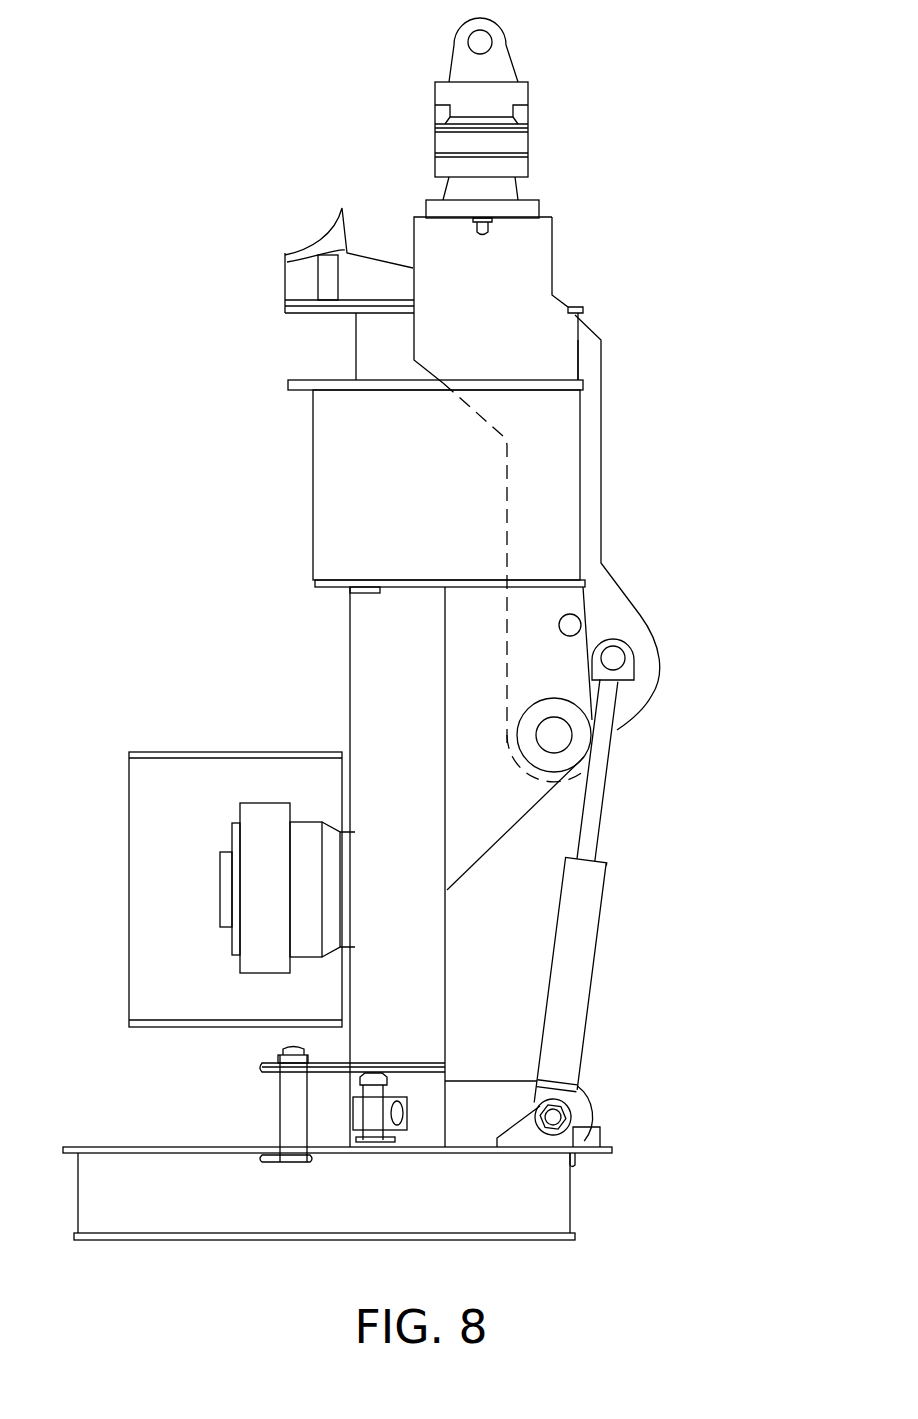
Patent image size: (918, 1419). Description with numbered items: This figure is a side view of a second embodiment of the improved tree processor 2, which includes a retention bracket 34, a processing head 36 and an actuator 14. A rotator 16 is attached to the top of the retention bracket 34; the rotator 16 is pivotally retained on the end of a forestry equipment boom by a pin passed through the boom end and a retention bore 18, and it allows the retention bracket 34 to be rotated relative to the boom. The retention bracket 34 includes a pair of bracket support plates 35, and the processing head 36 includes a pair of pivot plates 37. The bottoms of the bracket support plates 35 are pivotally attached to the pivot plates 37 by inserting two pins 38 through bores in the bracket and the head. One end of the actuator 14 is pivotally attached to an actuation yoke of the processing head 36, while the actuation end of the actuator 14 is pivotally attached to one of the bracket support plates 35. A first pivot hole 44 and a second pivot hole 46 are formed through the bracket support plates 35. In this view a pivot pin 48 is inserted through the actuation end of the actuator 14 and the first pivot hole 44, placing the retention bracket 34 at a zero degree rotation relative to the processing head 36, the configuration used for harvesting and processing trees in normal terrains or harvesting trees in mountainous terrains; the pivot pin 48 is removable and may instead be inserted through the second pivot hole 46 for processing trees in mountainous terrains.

The improved tree processor 2 is at (262, 656).
The actuator 14 is at (585, 953).
The rotator 16 is at (528, 143).
The retention bore 18 is at (488, 40).
The retention bracket 34 is at (598, 333).
The bracket support plates 35 is at (590, 448).
The processing head 36 is at (313, 543).
The pivot plates 37 is at (510, 806).
The pins 38 is at (558, 740).
The first pivot hole 44 is at (617, 642).
The second pivot hole 46 is at (577, 618).
The pivot pin 48 is at (615, 658).